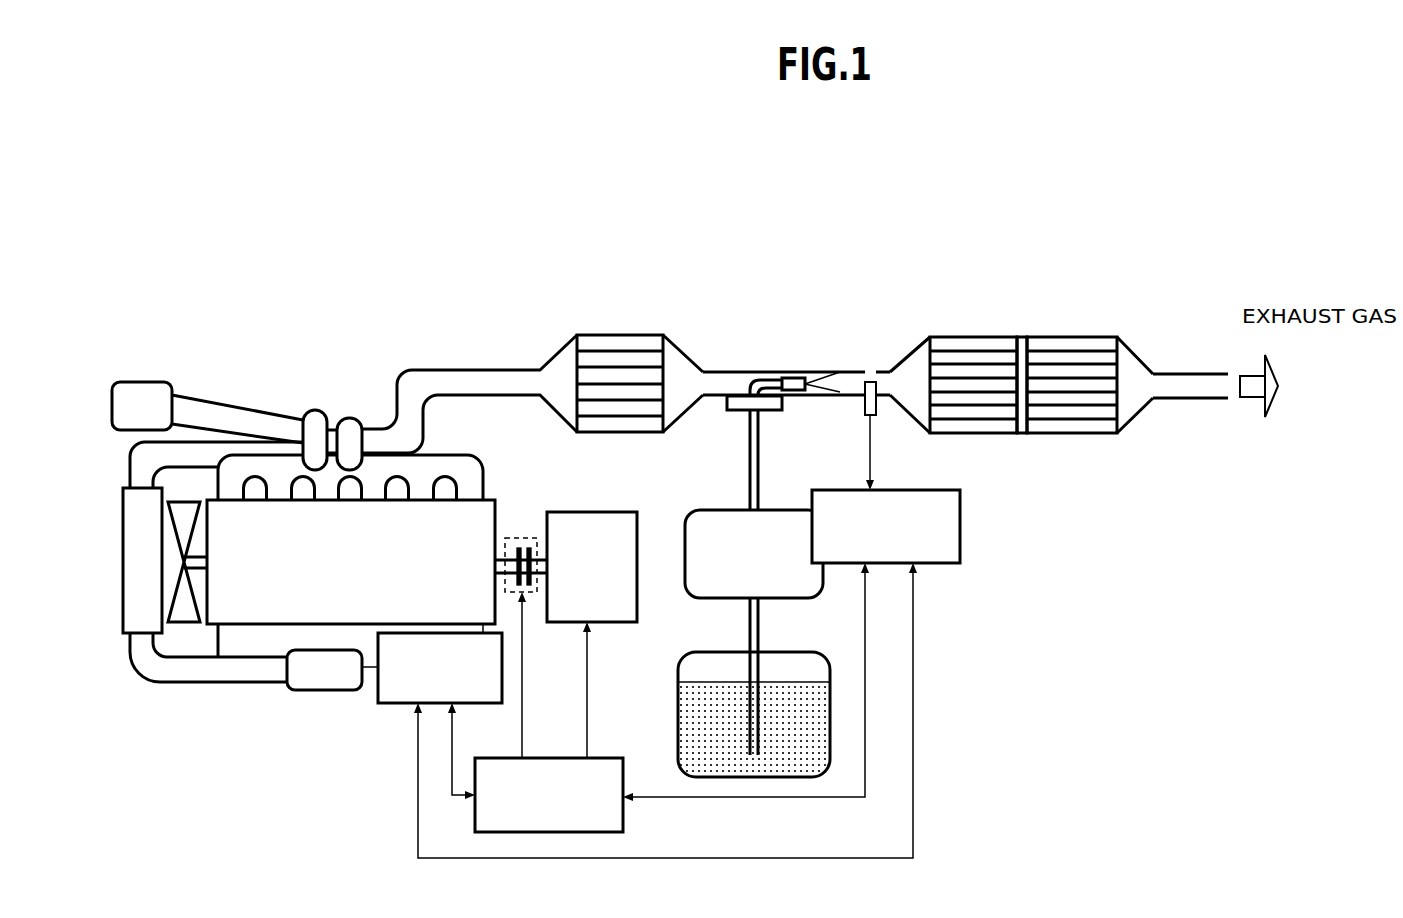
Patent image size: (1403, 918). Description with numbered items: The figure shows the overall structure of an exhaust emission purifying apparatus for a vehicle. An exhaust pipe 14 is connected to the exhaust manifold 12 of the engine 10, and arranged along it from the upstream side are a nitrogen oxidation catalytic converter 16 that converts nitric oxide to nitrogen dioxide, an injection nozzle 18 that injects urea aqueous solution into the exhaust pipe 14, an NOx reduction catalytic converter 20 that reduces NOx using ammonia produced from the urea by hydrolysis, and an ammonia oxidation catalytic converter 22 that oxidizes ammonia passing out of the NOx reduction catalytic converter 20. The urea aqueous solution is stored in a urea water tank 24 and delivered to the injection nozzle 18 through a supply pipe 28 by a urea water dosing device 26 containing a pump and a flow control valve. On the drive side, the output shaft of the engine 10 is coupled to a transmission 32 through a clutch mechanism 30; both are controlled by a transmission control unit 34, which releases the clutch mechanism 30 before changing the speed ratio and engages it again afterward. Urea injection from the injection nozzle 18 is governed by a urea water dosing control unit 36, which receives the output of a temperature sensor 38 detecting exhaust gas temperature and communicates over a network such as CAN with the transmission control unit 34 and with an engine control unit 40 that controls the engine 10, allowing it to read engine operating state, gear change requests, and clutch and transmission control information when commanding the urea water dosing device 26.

The engine 10 is at (334, 579).
The exhaust manifold 12 is at (481, 468).
The exhaust pipe 14 is at (447, 370).
The nitrogen oxidation catalytic converter 16 is at (600, 348).
The injection nozzle 18 is at (797, 378).
The NOx reduction catalytic converter 20 is at (967, 348).
The ammonia oxidation catalytic converter 22 is at (1067, 350).
The urea water tank 24 is at (688, 658).
The urea water dosing device 26 is at (738, 570).
The supply pipe 28 is at (760, 633).
The clutch mechanism 30 is at (527, 538).
The transmission 32 is at (575, 580).
The transmission control unit 34 is at (553, 758).
The urea water dosing control unit 36 is at (960, 512).
The temperature sensor 38 is at (863, 410).
The engine control unit 40 is at (392, 705).